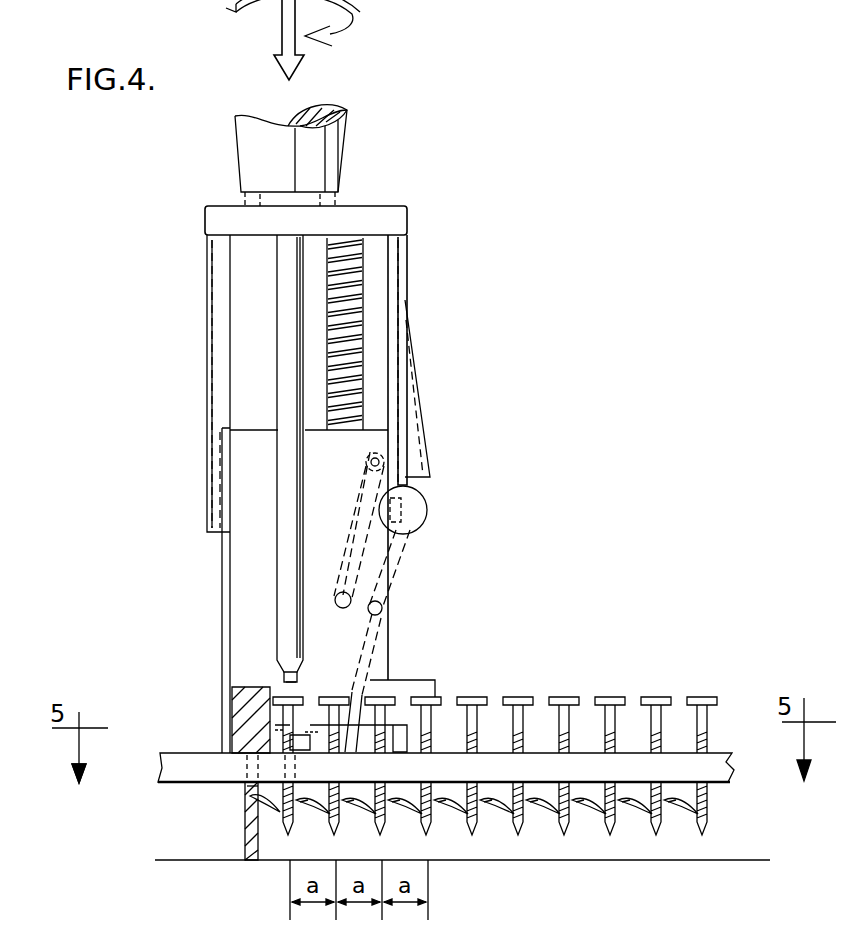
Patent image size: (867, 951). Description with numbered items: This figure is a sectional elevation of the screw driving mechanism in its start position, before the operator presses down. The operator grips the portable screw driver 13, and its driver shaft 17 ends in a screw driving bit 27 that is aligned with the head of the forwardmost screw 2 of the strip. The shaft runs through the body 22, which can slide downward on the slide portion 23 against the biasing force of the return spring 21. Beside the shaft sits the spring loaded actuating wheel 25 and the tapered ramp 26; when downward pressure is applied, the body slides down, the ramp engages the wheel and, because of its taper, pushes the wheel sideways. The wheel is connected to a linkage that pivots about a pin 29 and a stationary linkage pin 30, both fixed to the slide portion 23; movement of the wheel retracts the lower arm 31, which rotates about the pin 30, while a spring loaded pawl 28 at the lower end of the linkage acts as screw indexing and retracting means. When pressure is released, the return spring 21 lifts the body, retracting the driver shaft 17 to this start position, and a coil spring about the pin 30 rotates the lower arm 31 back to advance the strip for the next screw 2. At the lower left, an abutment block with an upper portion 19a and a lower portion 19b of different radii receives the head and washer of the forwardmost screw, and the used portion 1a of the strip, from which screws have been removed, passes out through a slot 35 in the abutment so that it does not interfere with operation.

The used portion of the strip 1a is at (177, 748).
The screw 2 is at (703, 696).
The portable screw driver 13 is at (348, 152).
The driver shaft 17 is at (278, 600).
The upper portion of abutment block 19a is at (232, 692).
The lower portion of abutment block 19b is at (245, 800).
The return spring 21 is at (364, 322).
The body 22 is at (206, 372).
The slide portion 23 is at (400, 616).
The actuating wheel 25 is at (428, 506).
The ramp 26 is at (428, 462).
The screw driving bit 27 is at (284, 674).
The spring loaded pawl 28 is at (312, 697).
The pin 29 is at (364, 472).
The linkage pin 30 is at (383, 606).
The lower arm 31 is at (400, 653).
The slot 35 is at (247, 786).